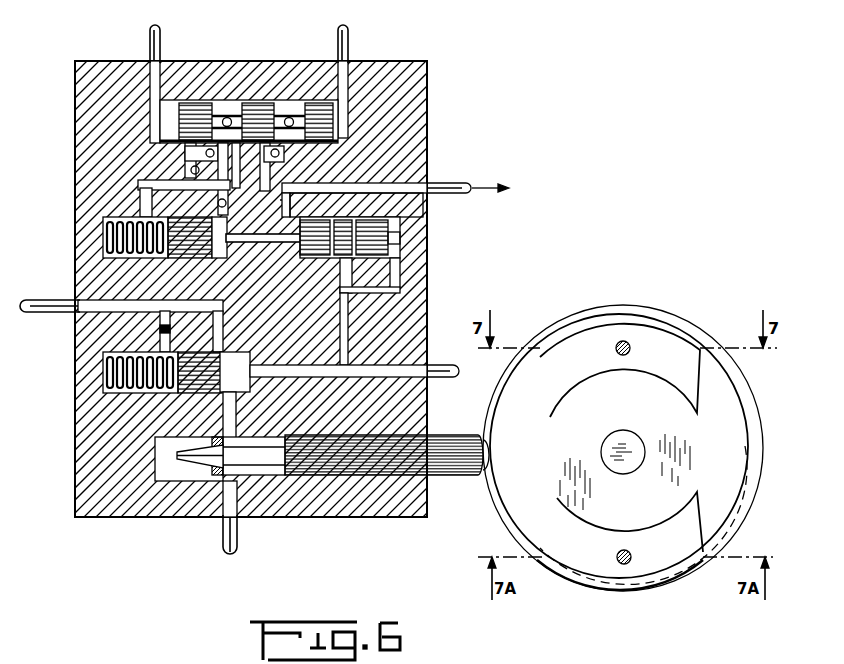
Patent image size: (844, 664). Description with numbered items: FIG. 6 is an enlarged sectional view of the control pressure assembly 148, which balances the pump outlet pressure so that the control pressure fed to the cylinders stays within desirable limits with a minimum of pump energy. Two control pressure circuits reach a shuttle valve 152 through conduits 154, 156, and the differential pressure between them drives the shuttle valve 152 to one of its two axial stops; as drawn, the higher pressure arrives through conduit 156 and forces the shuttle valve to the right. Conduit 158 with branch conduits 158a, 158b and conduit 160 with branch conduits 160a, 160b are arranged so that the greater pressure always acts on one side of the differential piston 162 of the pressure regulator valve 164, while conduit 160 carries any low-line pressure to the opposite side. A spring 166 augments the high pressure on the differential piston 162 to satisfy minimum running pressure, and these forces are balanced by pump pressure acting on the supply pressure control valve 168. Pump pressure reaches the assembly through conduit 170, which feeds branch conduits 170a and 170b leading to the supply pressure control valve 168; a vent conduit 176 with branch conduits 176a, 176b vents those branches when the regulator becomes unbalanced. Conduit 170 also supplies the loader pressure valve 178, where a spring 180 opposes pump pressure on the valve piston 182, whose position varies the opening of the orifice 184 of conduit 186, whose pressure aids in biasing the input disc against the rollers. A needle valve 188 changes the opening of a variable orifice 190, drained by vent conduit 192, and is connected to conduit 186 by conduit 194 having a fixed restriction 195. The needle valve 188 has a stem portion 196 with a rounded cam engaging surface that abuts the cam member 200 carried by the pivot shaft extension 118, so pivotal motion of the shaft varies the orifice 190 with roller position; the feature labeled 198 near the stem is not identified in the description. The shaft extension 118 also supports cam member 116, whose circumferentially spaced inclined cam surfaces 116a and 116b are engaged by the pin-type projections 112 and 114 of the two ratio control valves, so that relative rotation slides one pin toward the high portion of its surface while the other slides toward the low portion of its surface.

The control pressure assembly 148 is at (432, 97).
The shuttle valve 152 is at (260, 100).
The conduit 154 is at (347, 33).
The conduit 156 is at (160, 36).
The conduit 158 is at (140, 187).
The branch conduit 158a is at (280, 200).
The branch conduit 158b is at (277, 177).
The conduit 160 is at (217, 202).
The branch conduit 160a is at (185, 157).
The branch conduit 160b is at (298, 151).
The differential piston 162 is at (203, 258).
The pressure regulator valve 164 is at (248, 245).
The spring 166 is at (132, 258).
The supply pressure control valve 168 is at (312, 258).
The conduit 170 is at (312, 382).
The branch conduit 170a is at (350, 323).
The branch conduit 170b is at (405, 278).
The vent conduit 176 is at (441, 184).
The branch conduit 176a is at (281, 216).
The branch conduit 176b is at (332, 205).
The loader pressure valve 178 is at (240, 393).
The spring 180 is at (133, 394).
The valve piston 182 is at (200, 394).
The orifice 184 is at (222, 336).
The conduit 186 is at (60, 299).
The needle valve 188 is at (262, 437).
The orifice 190 is at (210, 445).
The vent conduit 192 is at (237, 540).
The conduit 194 is at (156, 425).
The fixed restriction 195 is at (160, 329).
The stem portion 196 is at (340, 470).
The nozzle tip 198 is at (484, 468).
The cam member 200 is at (570, 311).
The pin-type projection 112 is at (620, 357).
The pin-type projection 114 is at (624, 549).
The cam member 116 is at (751, 511).
The cam surface 116a is at (672, 384).
The cam surface 116b is at (683, 526).
The shaft extension 118 is at (645, 449).